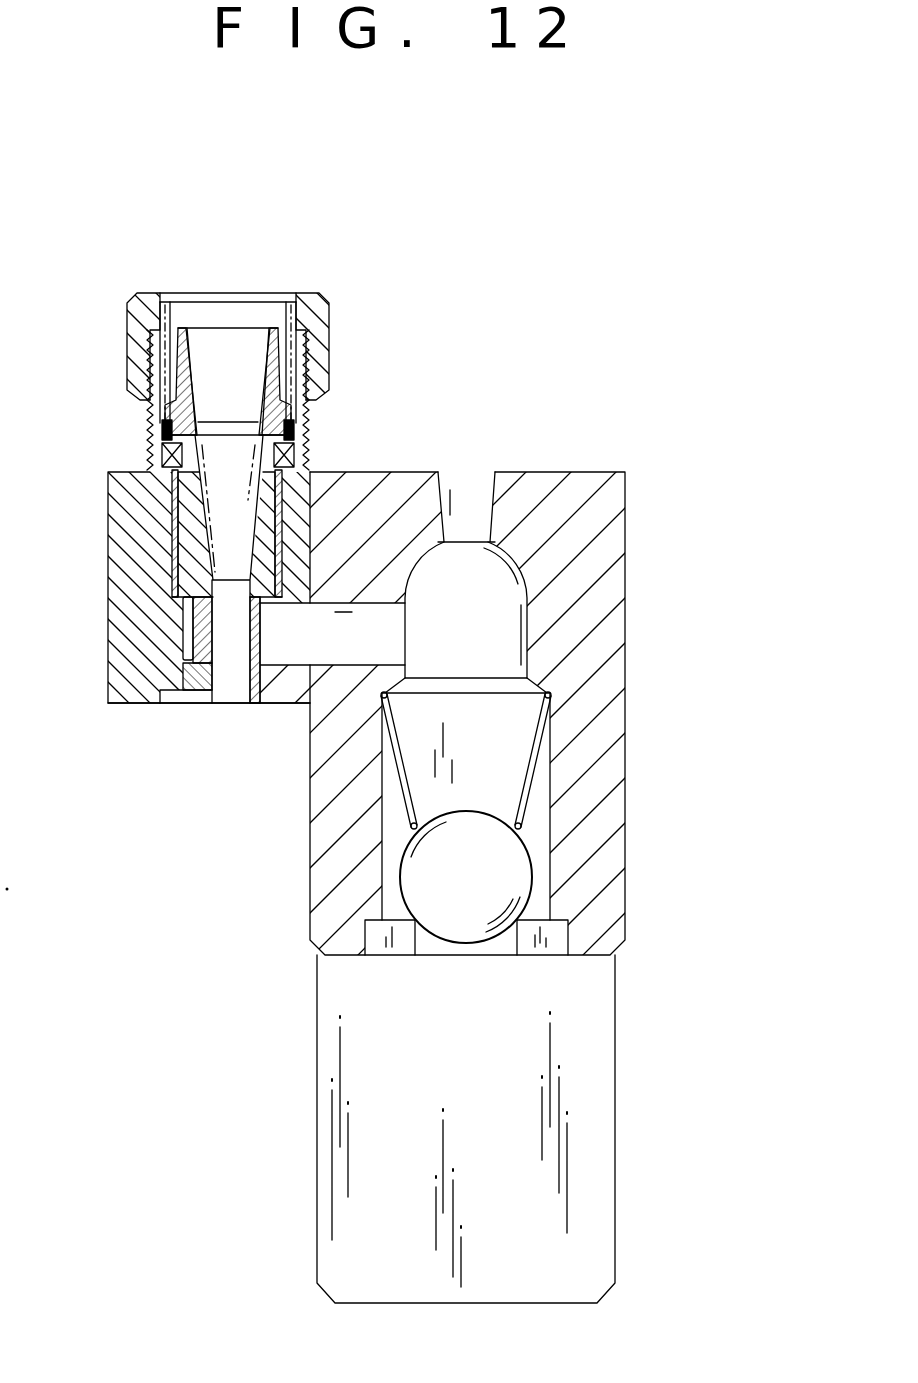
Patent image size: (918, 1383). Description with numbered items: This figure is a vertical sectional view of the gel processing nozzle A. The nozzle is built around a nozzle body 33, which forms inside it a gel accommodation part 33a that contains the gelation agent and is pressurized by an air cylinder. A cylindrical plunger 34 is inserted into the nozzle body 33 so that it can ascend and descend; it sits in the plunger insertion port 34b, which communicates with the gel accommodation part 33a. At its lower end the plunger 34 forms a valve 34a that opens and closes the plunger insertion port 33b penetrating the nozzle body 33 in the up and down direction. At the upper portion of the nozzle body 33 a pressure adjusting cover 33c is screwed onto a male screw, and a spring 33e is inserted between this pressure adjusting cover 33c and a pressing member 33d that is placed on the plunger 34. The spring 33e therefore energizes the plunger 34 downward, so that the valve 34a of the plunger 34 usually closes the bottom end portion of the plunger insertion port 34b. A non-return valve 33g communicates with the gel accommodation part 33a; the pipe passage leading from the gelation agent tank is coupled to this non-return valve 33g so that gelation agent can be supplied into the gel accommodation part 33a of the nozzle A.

The nozzle body 33 is at (600, 513).
The gel accommodation part 33a is at (507, 615).
The plunger insertion port 33b is at (122, 703).
The pressure adjusting cover 33c is at (153, 300).
The pressing member 33d is at (282, 362).
The spring 33e is at (310, 420).
The non-return valve 33g is at (505, 877).
The cylindrical plunger 34 is at (193, 578).
The valve 34a is at (165, 693).
The plunger insertion port 34b is at (178, 702).
The gel processing nozzle A is at (656, 390).